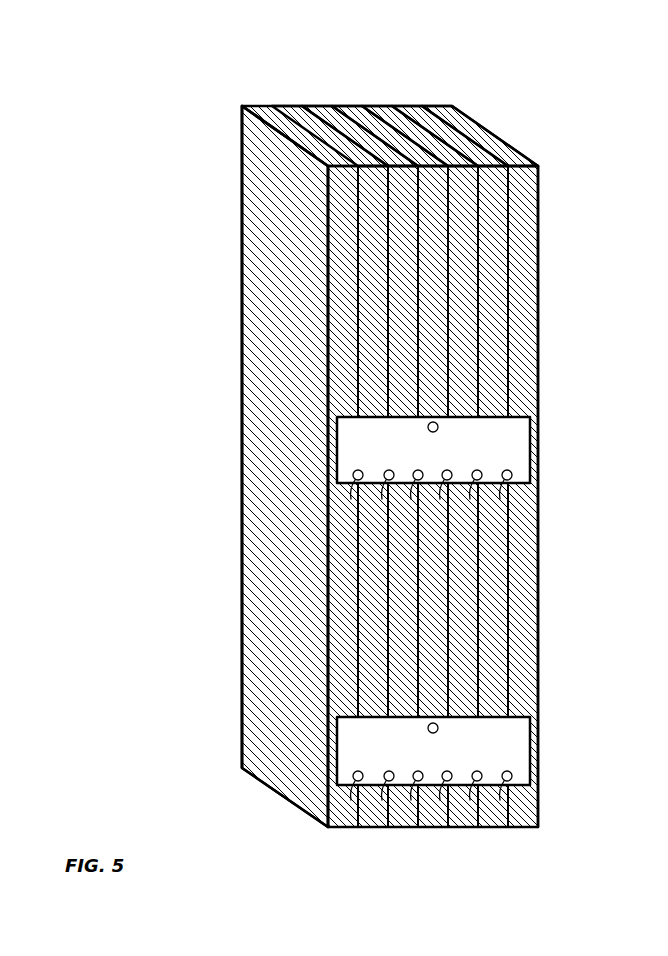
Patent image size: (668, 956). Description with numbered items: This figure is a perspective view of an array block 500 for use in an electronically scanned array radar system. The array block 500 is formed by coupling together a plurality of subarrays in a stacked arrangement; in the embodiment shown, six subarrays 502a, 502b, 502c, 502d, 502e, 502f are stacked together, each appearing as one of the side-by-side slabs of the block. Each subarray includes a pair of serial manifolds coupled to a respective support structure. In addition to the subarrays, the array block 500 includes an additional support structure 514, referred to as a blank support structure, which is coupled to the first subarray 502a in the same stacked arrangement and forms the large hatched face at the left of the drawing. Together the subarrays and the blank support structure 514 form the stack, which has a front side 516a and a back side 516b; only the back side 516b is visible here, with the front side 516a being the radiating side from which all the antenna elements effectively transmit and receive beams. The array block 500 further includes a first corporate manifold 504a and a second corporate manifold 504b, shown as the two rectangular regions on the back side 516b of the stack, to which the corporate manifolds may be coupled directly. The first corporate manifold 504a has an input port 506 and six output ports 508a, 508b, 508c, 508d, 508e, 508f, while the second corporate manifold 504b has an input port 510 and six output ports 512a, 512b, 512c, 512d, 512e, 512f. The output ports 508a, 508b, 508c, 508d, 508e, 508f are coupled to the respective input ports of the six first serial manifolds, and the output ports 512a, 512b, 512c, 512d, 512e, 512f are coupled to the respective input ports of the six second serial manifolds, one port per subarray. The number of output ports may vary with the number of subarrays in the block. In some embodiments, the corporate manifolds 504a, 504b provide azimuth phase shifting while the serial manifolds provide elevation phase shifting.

The array block 500 is at (555, 112).
The first subarray 502a is at (295, 105).
The second subarray 502b is at (322, 105).
The third subarray 502c is at (355, 105).
The fourth subarray 502d is at (383, 105).
The fifth subarray 502e is at (412, 105).
The sixth subarray 502f is at (473, 125).
The first corporate manifold 504a is at (533, 730).
The second corporate manifold 504b is at (533, 430).
The input port 506 is at (433, 723).
The output port 508a is at (353, 777).
The output port 508b is at (388, 771).
The output port 508c is at (416, 771).
The output port 508d is at (449, 771).
The output port 508e is at (479, 772).
The output port 508f is at (512, 778).
The input port 510 is at (433, 422).
The output port 512a is at (353, 476).
The output port 512b is at (388, 470).
The output port 512c is at (416, 470).
The output port 512d is at (449, 470).
The output port 512e is at (479, 471).
The output port 512f is at (512, 477).
The blank support structure 514 is at (267, 325).
The front side 516a is at (212, 186).
The back side 516b is at (470, 230).